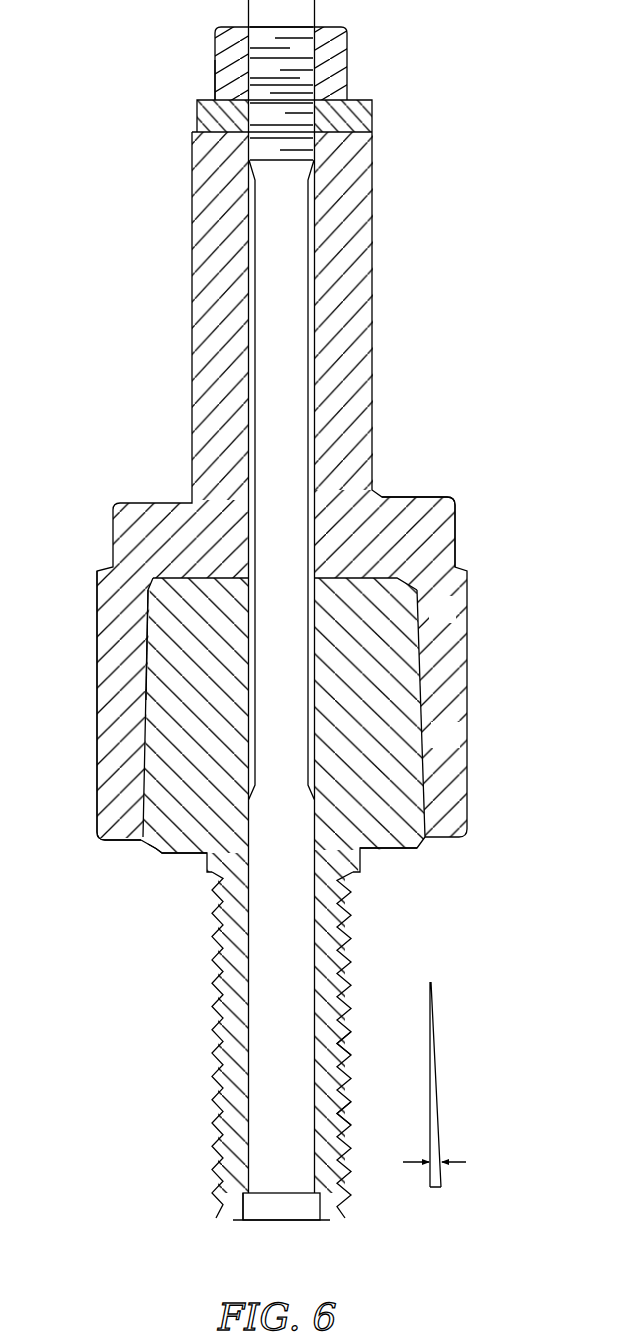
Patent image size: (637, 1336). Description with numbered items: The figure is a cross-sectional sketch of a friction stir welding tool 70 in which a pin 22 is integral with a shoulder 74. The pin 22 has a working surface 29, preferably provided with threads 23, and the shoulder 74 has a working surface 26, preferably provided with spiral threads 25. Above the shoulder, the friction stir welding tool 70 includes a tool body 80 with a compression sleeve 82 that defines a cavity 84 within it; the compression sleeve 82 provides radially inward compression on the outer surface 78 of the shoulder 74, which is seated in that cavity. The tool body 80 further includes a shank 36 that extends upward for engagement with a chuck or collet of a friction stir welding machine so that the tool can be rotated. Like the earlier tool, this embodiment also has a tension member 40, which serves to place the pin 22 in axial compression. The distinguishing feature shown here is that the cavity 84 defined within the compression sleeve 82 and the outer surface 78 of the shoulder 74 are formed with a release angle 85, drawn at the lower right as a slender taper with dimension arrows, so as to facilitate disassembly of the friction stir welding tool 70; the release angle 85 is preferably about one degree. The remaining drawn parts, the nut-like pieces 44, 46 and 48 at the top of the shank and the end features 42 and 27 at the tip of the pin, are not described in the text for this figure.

The friction stir welding tool 70 is at (114, 207).
The nut 44 is at (348, 50).
The nut side wall 46 is at (215, 75).
The washer 48 is at (372, 110).
The shank 36 is at (360, 292).
The tension member 40 is at (271, 443).
The tool body 80 is at (447, 498).
The compression sleeve 82 is at (97, 734).
The outer surface 78 is at (427, 648).
The shoulder 74 is at (385, 738).
The cavity 84 is at (148, 618).
The spiral threads 25 is at (160, 856).
The working surface 26 is at (400, 850).
The pin 22 is at (346, 947).
The threads 23 is at (342, 1054).
The working surface 29 is at (342, 1114).
The shank end 42 is at (243, 1200).
The end plate 27 is at (310, 1203).
The release angle 85 is at (441, 1187).